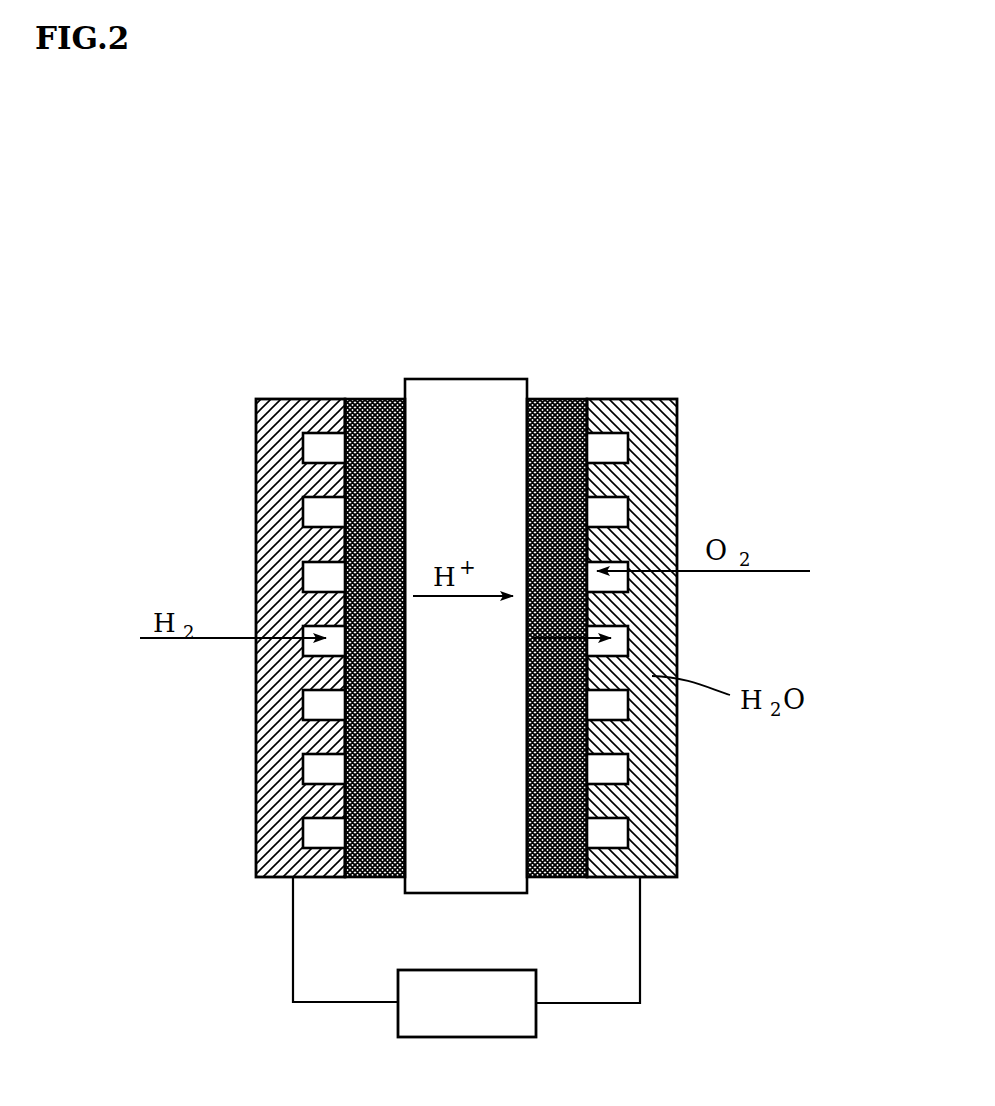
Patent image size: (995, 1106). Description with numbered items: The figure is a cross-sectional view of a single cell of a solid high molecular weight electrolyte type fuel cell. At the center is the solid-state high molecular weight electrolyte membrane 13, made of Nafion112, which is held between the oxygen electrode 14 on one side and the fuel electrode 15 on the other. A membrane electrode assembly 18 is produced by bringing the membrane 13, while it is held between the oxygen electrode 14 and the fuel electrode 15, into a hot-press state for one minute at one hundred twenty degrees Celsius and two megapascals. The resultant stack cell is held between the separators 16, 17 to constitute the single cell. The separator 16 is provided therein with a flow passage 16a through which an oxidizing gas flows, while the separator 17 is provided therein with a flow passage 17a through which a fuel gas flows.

The solid-state high molecular weight electrolyte membrane 13 is at (475, 405).
The oxygen electrode 14 is at (583, 400).
The fuel electrode 15 is at (345, 400).
The separator 16 is at (655, 432).
The flow passage 16a is at (618, 508).
The separator 17 is at (270, 432).
The flow passage 17a is at (315, 508).
The membrane electrode assembly 18 is at (386, 913).